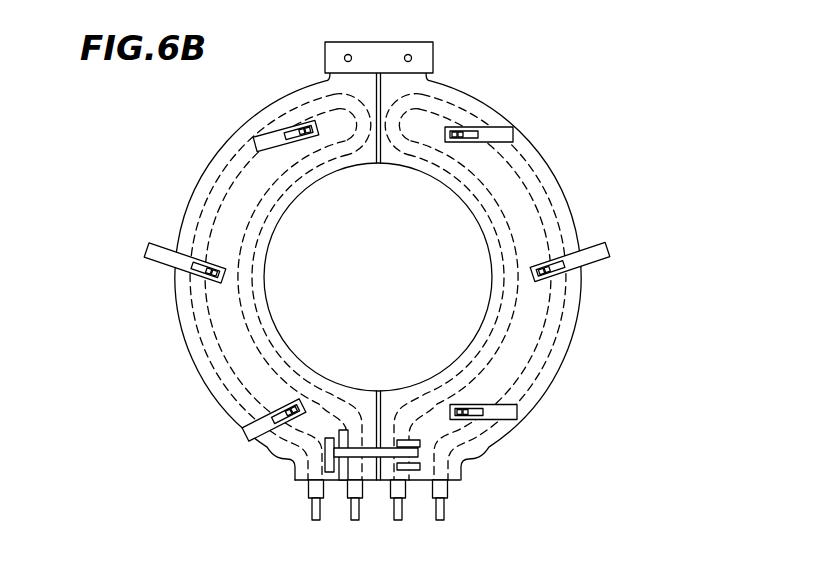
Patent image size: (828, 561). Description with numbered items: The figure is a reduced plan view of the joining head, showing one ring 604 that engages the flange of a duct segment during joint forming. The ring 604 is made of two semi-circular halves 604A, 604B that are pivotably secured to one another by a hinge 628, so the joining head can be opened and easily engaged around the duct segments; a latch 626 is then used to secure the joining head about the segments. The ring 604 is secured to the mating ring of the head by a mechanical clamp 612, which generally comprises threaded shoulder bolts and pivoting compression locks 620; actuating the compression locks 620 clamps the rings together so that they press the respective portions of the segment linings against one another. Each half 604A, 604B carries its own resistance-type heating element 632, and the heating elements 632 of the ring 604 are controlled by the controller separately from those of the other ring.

The ring 604 is at (566, 157).
The semi-circular half 604A is at (192, 343).
The semi-circular half 604B is at (577, 314).
The mechanical clamp 612 is at (262, 162).
The pivoting compression lock 620 is at (272, 136).
The latch 626 is at (310, 452).
The hinge 628 is at (383, 50).
The resistance-type heating element 632 is at (308, 511).